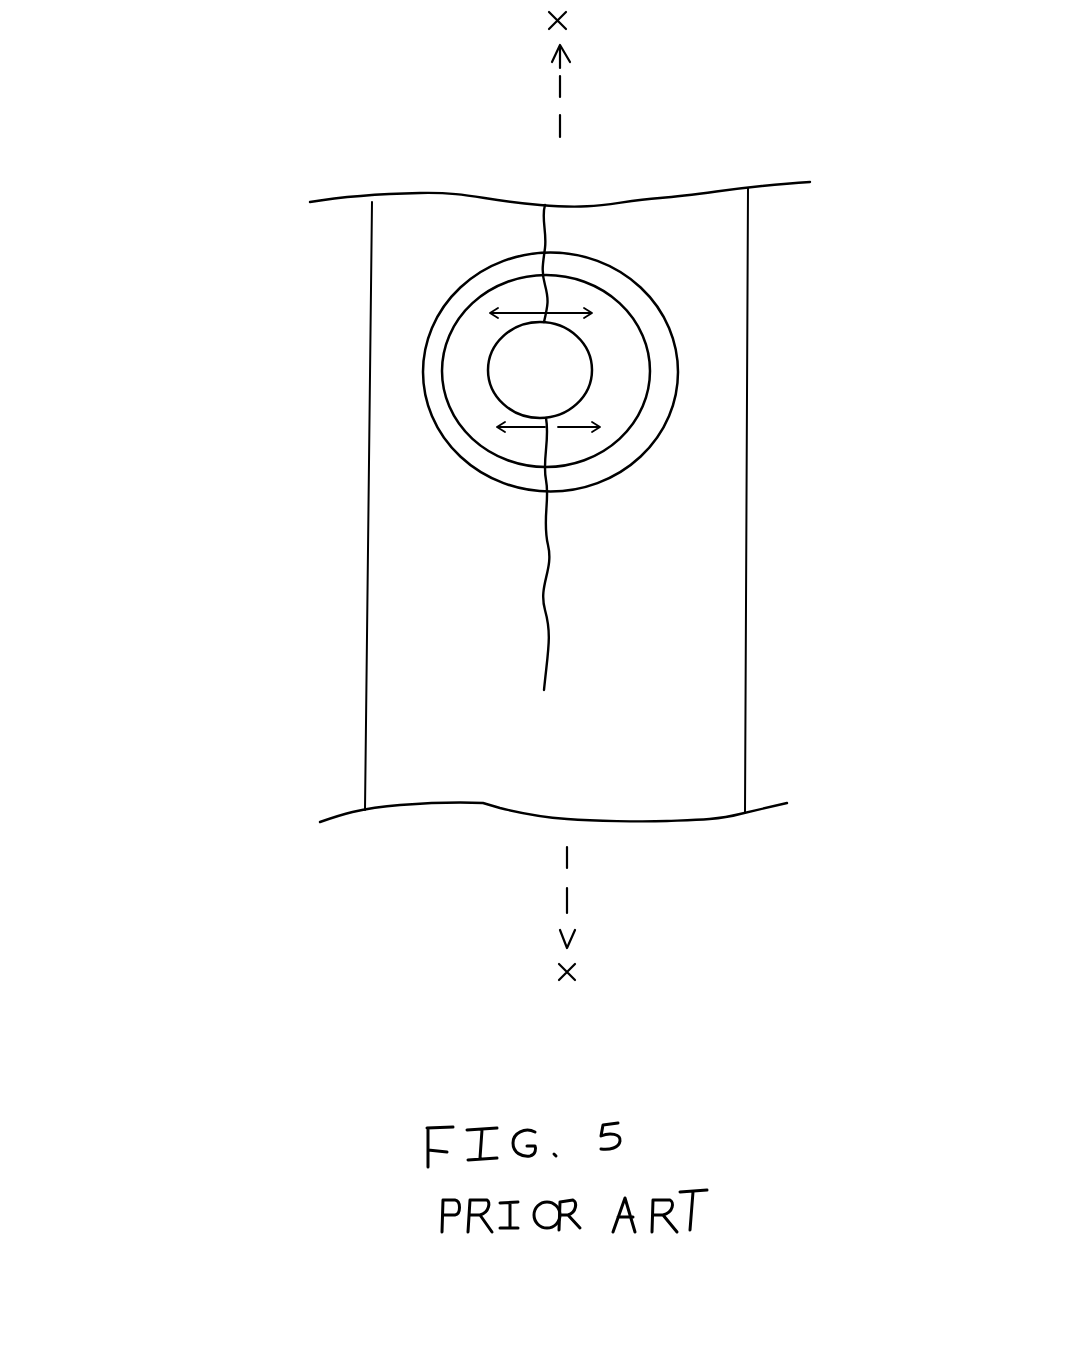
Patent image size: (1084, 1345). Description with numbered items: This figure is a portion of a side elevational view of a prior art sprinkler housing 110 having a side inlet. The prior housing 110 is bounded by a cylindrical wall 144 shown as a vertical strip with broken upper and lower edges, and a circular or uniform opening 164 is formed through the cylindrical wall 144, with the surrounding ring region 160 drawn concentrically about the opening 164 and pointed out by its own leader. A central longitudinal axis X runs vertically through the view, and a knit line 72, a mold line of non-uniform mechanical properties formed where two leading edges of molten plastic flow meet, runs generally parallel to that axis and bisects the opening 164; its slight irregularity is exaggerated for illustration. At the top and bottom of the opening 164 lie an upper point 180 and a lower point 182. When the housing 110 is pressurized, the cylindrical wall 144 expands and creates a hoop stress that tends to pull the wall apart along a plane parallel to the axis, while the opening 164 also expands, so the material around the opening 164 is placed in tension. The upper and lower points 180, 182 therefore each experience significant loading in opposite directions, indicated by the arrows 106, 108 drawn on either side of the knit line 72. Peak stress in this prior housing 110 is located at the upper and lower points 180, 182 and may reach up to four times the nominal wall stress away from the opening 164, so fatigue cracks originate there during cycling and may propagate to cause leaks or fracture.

The prior housing 110 is at (278, 642).
The cylindrical wall 144 is at (702, 622).
The outer ring 160 is at (608, 330).
The upper point 180 is at (536, 334).
The opening 164 is at (562, 392).
The lower point 182 is at (556, 410).
The knit line 72 is at (540, 595).
The arrow 106 is at (517, 370).
The arrow 108 is at (572, 369).